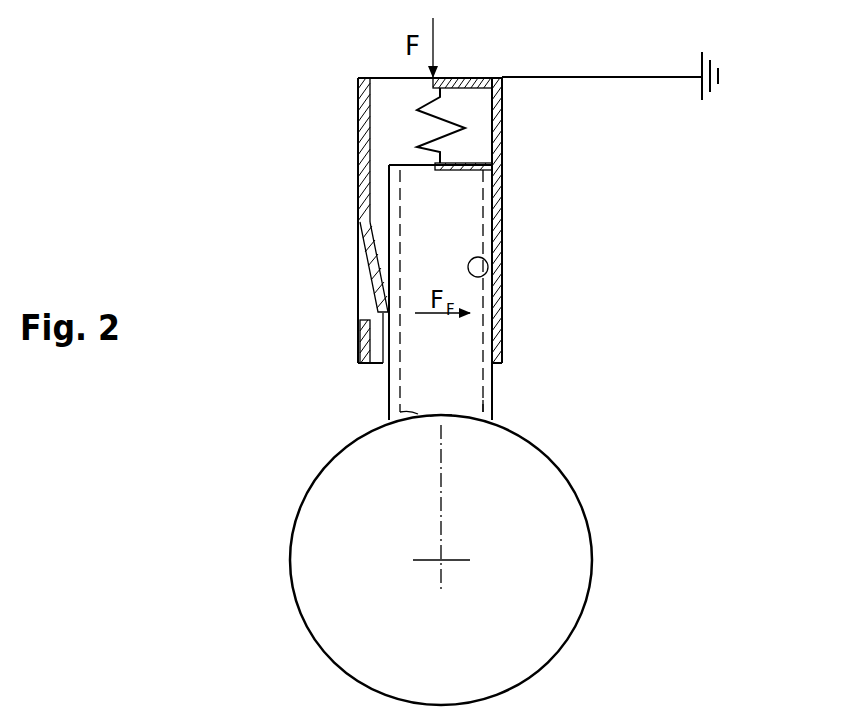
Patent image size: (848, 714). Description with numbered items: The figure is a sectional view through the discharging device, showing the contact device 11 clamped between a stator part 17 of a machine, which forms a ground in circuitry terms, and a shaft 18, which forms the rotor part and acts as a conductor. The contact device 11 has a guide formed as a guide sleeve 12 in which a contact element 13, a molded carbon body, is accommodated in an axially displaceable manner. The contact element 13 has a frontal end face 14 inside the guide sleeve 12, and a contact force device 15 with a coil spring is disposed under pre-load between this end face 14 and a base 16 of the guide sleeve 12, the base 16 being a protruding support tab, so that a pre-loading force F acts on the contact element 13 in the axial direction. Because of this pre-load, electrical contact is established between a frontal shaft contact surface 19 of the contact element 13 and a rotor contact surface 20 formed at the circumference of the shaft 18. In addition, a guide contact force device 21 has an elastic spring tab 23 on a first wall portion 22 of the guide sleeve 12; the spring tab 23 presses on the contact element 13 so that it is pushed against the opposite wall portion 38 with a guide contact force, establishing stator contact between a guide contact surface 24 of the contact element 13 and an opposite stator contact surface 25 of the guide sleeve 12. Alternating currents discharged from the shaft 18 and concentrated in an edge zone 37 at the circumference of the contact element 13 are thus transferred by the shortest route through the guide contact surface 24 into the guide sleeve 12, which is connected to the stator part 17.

The contact device 11 is at (509, 220).
The guide sleeve 12 is at (484, 265).
The contact element 13 is at (493, 405).
The end face 14 is at (472, 163).
The contact force device 15 is at (411, 142).
The base 16 is at (467, 77).
The stator part 17 is at (727, 66).
The shaft 18 is at (520, 532).
The shaft contact surface 19 is at (461, 420).
The rotor contact surface 20 is at (420, 414).
The guide contact force device 21 is at (355, 296).
The first wall portion 22 is at (358, 341).
The spring tab 23 is at (372, 263).
The guide contact surface 24 is at (516, 313).
The stator contact surface 25 is at (490, 262).
The edge zone 37 is at (488, 413).
The wall portion 38 is at (495, 332).